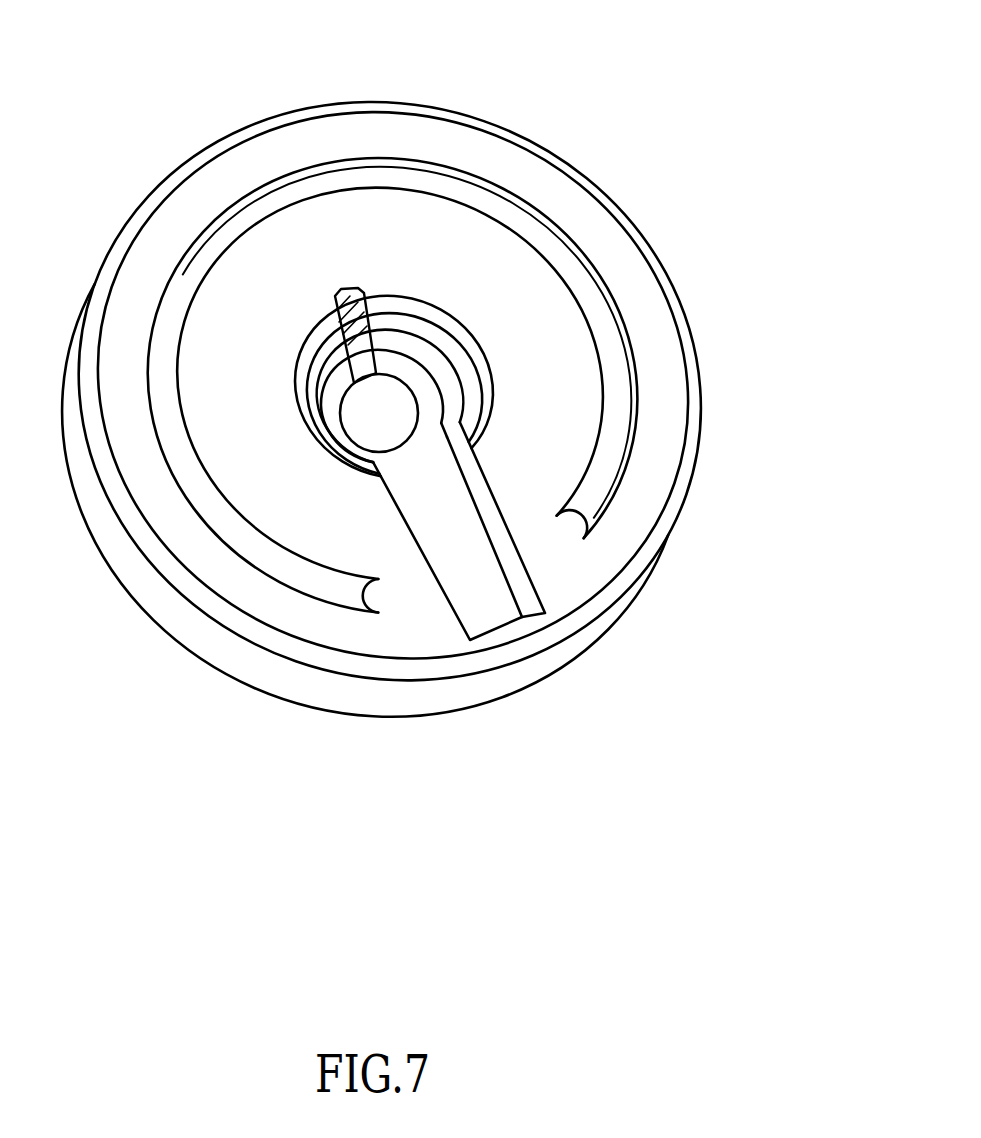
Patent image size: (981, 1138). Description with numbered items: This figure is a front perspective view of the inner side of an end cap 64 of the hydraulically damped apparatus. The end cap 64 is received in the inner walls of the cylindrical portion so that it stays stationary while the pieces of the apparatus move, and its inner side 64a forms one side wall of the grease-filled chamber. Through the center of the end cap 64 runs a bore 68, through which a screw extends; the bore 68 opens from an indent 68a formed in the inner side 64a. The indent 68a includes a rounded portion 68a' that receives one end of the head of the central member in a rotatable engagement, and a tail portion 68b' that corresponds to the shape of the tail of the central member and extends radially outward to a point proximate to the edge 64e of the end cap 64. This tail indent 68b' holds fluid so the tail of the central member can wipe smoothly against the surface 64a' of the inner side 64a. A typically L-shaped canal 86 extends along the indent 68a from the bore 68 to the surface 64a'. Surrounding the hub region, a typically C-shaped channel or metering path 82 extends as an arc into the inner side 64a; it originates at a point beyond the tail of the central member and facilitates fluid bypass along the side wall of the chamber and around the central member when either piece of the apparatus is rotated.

The end cap 64 is at (503, 110).
The inner side 64a is at (390, 435).
The surface 64a' is at (453, 715).
The edge 64e is at (568, 648).
The bore 68 is at (397, 420).
The indent 68a is at (470, 290).
The rounded portion 68a' is at (518, 312).
The tail portion 68b' is at (524, 596).
The channel or metering path 82 is at (615, 382).
The canal 86 is at (355, 292).